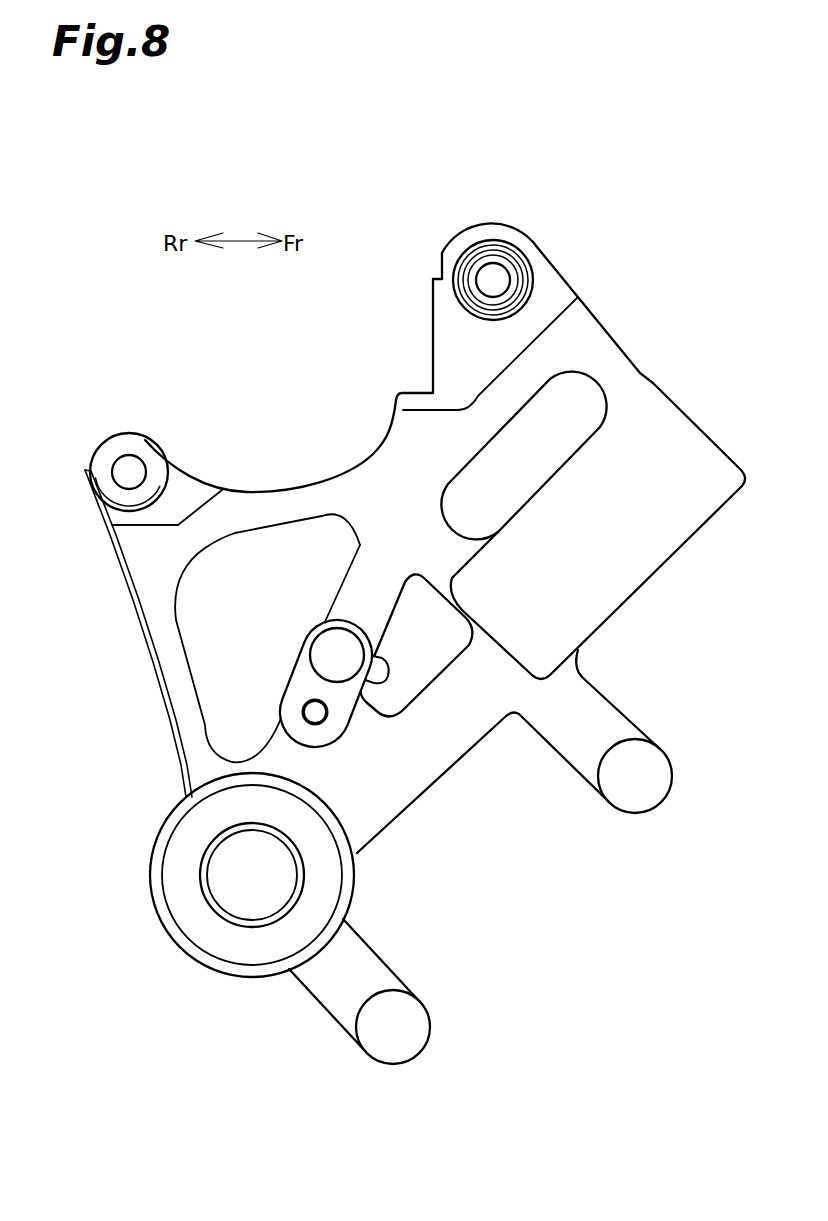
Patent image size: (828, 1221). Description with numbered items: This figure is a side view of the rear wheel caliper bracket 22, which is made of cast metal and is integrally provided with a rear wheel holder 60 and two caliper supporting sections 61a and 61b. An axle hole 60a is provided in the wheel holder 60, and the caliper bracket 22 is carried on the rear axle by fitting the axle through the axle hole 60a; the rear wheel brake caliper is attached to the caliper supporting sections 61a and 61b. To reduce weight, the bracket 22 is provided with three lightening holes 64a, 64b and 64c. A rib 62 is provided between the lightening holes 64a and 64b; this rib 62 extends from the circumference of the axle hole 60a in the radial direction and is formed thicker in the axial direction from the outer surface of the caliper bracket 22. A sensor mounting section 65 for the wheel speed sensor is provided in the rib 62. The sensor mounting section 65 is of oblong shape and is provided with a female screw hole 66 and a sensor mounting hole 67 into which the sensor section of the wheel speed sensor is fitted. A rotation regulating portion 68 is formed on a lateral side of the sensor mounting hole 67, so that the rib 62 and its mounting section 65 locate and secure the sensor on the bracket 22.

The rear wheel caliper bracket 22 is at (362, 423).
The rear wheel holder 60 is at (178, 908).
The axle hole 60a is at (218, 845).
The caliper supporting section 61a is at (108, 520).
The caliper supporting section 61b is at (548, 277).
The rib 62 is at (363, 577).
The lightening hole 64a is at (203, 607).
The lightening hole 64b is at (433, 677).
The lightening hole 64c is at (572, 405).
The sensor mounting section 65 is at (293, 668).
The female screw hole 66 is at (310, 715).
The sensor mounting hole 67 is at (330, 640).
The rotation regulating portion 68 is at (388, 667).